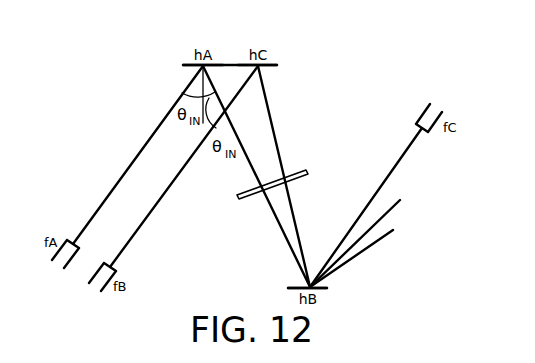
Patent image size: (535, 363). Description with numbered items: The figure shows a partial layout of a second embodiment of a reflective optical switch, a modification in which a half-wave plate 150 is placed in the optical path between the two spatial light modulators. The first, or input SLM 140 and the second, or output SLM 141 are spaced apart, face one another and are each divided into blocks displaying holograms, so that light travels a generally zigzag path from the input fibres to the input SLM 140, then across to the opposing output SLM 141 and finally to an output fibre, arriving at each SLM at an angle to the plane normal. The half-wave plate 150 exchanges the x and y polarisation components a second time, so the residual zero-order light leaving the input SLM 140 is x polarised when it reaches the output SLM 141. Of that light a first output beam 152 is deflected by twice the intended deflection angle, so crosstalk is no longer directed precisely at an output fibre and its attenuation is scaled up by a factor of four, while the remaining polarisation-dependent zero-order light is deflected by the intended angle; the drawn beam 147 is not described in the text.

The input SLM 140 is at (287, 63).
The output SLM 141 is at (336, 287).
The reflected beam 147 is at (400, 200).
The half-wave plate 150 is at (238, 197).
The first output beam 152 is at (393, 230).